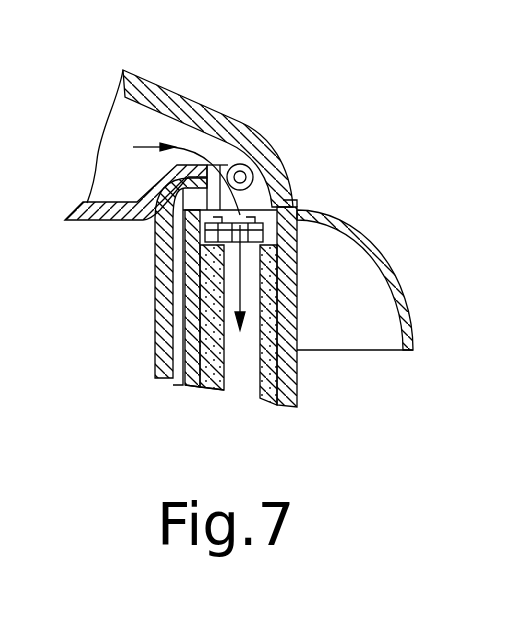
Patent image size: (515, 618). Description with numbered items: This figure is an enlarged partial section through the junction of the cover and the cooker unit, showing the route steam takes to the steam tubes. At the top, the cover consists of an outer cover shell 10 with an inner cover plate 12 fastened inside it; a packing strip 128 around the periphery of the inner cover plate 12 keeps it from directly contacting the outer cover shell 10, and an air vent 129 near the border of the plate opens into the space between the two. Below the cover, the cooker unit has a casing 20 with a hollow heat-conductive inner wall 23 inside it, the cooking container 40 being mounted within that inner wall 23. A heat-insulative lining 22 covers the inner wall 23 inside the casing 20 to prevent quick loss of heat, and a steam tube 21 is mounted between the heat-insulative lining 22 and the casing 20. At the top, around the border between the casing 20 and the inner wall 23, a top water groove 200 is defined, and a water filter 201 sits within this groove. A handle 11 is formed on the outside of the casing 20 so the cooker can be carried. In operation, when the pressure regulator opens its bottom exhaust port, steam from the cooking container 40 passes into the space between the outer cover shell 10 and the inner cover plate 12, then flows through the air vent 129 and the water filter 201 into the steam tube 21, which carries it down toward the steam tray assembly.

The outer cover shell 10 is at (163, 85).
The handle 11 is at (400, 270).
The inner cover plate 12 is at (100, 207).
The casing 20 is at (293, 397).
The steam tube 21 is at (262, 350).
The heat-insulative lining 22 is at (200, 388).
The hollow heat-conductive inner wall 23 is at (190, 302).
The cooking container 40 is at (157, 343).
The packing strip 128 is at (258, 124).
The air vent 129 is at (219, 168).
The top water groove 200 is at (263, 185).
The water filter 201 is at (290, 200).